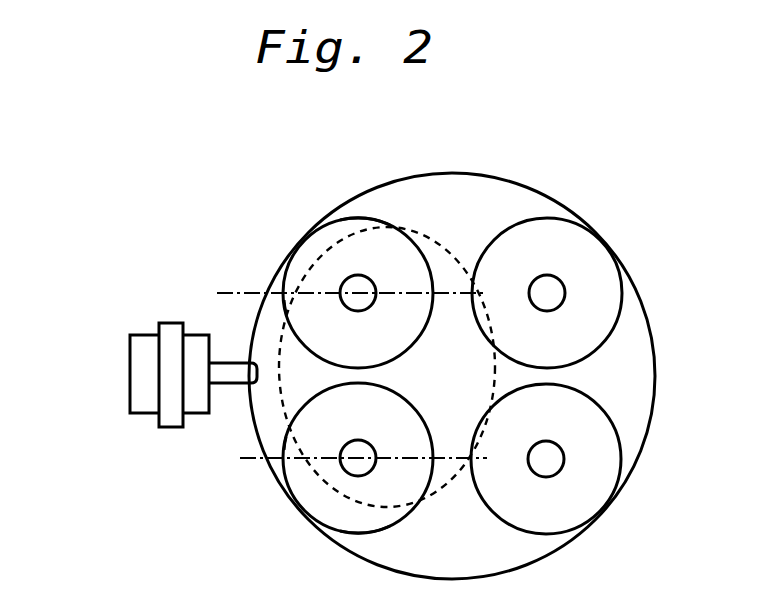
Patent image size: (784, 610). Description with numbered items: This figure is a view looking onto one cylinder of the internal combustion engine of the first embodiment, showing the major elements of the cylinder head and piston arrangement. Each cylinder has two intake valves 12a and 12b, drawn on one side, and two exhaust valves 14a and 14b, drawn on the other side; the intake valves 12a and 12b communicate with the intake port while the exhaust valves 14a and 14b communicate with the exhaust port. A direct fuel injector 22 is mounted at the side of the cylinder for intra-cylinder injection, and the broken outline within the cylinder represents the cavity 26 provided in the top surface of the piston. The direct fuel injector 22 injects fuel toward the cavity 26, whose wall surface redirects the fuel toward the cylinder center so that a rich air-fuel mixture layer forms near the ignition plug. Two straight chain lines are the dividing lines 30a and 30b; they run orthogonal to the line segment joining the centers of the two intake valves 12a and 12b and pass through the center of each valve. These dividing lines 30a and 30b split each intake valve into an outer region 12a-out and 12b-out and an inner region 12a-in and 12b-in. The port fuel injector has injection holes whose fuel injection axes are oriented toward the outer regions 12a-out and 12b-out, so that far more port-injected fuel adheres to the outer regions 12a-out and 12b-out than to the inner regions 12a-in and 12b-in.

The direct fuel injector 22 is at (130, 380).
The cavity 26 is at (427, 234).
The dividing line 30a is at (243, 459).
The dividing line 30b is at (236, 293).
The intake valve 12a is at (284, 472).
The intake valve 12b is at (285, 284).
The inner region of intake valve 12a 12a-in is at (287, 437).
The outer region of intake valve 12a 12a-out is at (387, 497).
The inner region of intake valve 12b 12b-in is at (288, 313).
The outer region of intake valve 12b 12b-out is at (388, 250).
The exhaust valve 14a is at (595, 466).
The exhaust valve 14b is at (595, 283).